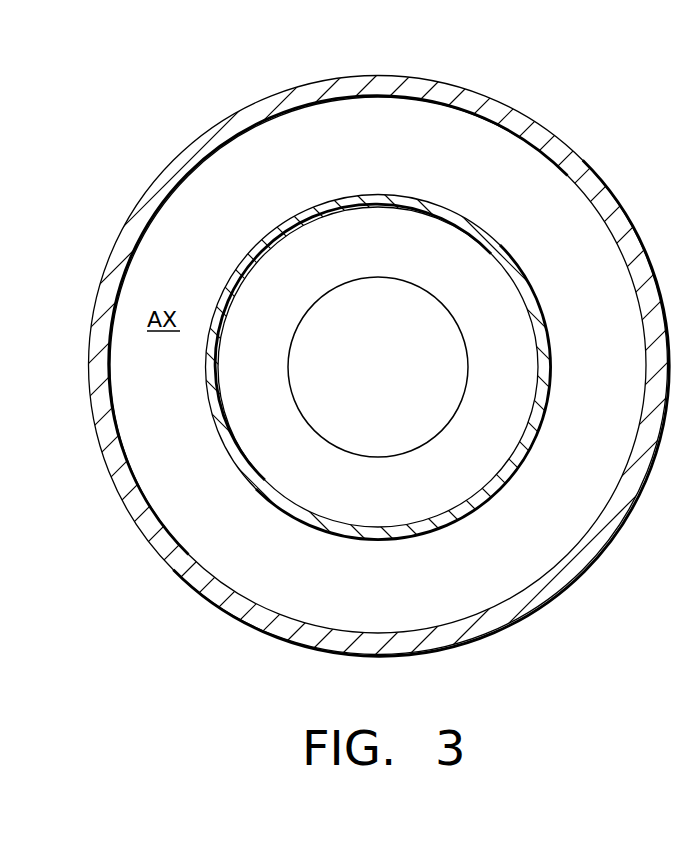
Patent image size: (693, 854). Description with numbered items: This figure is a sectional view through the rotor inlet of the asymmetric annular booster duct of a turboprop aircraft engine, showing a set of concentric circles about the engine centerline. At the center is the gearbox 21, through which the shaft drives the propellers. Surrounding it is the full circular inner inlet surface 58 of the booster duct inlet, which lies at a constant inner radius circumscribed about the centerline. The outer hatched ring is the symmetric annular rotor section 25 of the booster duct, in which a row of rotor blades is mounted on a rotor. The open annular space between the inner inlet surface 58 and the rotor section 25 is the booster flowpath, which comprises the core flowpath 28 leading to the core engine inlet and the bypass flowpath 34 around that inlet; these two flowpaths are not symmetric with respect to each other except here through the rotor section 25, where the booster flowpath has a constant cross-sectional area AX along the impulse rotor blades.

The rotor section 25 is at (452, 72).
The core flowpath 28 is at (330, 142).
The bypass flowpath 34 is at (256, 568).
The inner inlet surface 58 is at (377, 193).
The gearbox 21 is at (362, 277).